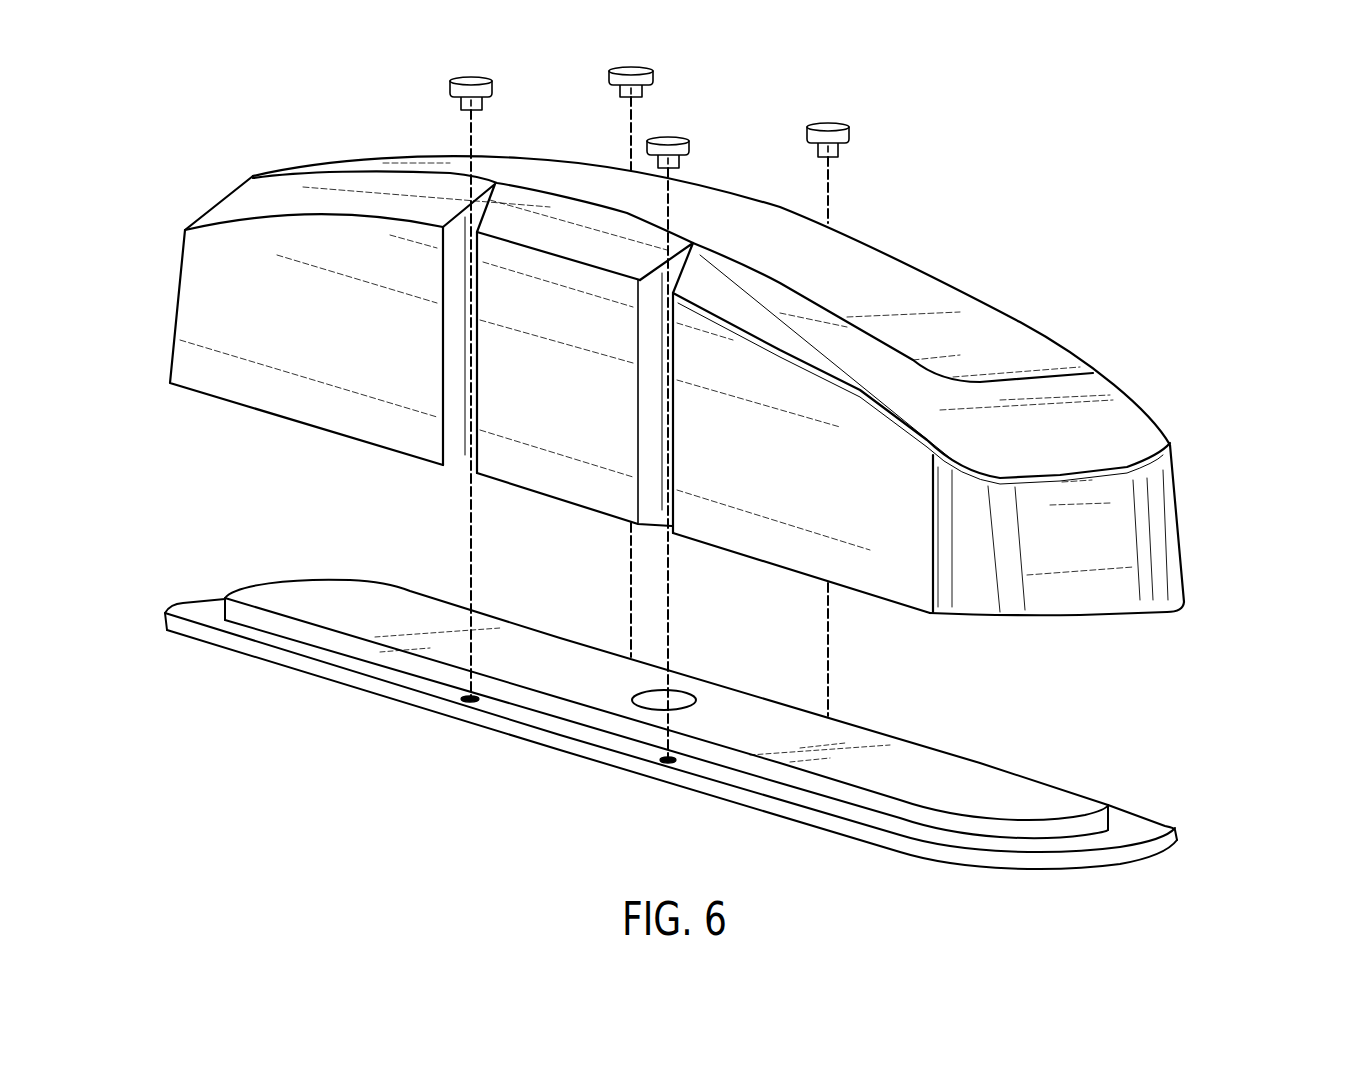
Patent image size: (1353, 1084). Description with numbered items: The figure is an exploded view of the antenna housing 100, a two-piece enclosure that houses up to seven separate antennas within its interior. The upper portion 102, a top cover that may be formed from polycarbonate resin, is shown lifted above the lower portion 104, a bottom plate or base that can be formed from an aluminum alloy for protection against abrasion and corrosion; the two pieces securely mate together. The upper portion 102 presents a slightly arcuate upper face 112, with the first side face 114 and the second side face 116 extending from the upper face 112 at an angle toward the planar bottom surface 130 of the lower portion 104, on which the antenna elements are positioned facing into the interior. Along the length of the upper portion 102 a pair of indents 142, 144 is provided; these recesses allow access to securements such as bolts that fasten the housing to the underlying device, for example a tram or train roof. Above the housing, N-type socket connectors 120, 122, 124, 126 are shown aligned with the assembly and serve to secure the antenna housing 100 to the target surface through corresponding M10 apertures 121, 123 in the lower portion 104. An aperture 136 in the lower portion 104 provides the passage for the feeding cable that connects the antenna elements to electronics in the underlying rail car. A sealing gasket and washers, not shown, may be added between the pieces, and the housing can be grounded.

The antenna housing 100 is at (1010, 176).
The upper portion 102 is at (1240, 438).
The lower portion 104 is at (1196, 829).
The upper face 112 is at (938, 292).
The first side face 114 is at (172, 313).
The second side face 116 is at (1112, 524).
The N-type socket connector 120 is at (492, 85).
The M10 aperture 121 is at (467, 706).
The N-type socket connector 122 is at (653, 75).
The M10 aperture 123 is at (670, 765).
The N-type socket connector 124 is at (689, 145).
The N-type socket connector 126 is at (849, 133).
The planar bottom surface 130 is at (762, 814).
The aperture 136 is at (653, 712).
The indent 142 is at (457, 420).
The indent 144 is at (652, 480).